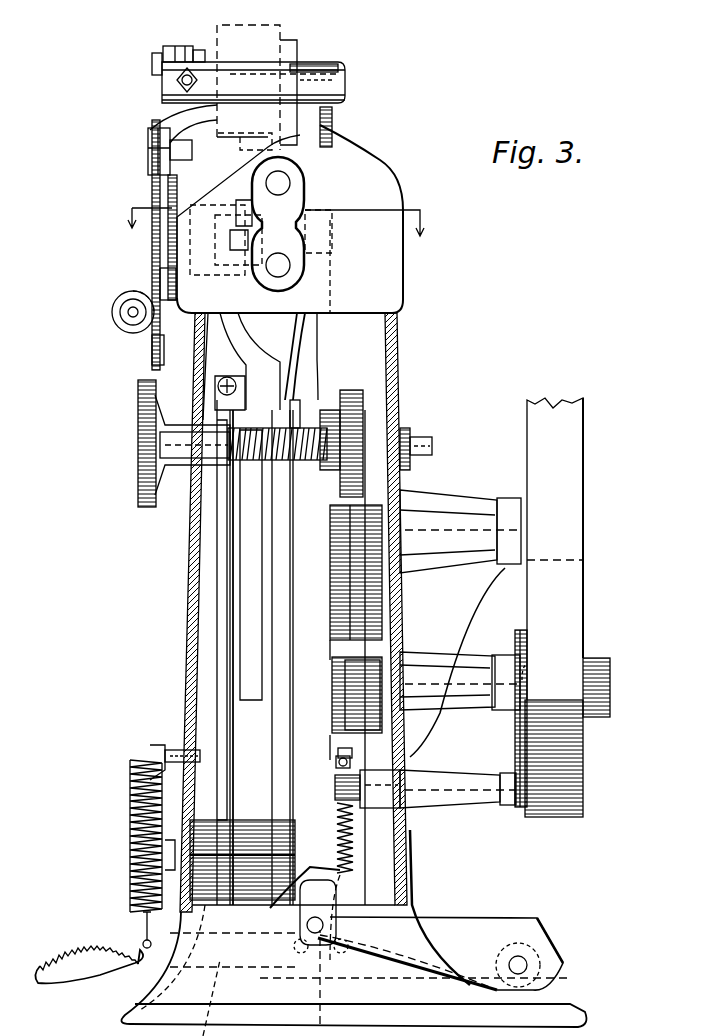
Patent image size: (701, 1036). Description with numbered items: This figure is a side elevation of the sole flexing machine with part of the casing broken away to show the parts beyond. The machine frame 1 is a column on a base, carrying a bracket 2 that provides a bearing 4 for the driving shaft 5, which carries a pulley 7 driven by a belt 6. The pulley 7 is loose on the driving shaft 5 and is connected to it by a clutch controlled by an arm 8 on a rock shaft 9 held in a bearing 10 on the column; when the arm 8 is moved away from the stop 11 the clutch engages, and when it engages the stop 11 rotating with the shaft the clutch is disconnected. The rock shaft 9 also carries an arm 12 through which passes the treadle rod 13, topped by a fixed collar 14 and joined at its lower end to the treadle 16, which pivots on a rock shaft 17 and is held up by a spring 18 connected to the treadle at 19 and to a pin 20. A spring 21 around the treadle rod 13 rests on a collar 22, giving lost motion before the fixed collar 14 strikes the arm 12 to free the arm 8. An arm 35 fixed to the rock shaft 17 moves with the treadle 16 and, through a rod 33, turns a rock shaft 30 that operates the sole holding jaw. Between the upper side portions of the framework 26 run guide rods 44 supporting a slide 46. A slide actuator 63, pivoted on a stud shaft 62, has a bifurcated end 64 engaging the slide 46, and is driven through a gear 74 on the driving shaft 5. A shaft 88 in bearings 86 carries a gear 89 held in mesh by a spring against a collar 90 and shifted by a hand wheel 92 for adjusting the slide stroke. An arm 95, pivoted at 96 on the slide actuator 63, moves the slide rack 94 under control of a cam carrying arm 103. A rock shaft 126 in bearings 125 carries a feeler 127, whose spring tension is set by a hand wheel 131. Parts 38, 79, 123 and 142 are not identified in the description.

The machine frame 1 is at (187, 681).
The bracket 2 is at (500, 590).
The bearing 4 is at (440, 713).
The driving shaft 5 is at (452, 680).
The belt 6 is at (580, 490).
The pulley 7 is at (578, 592).
The arm 8 is at (490, 746).
The rock shaft 9 is at (458, 803).
The bearing 10 is at (480, 805).
The stop 11 is at (522, 680).
The arm 12 is at (372, 785).
The treadle rod 13 is at (335, 785).
The fixed collar 14 is at (336, 762).
The treadle 16 is at (353, 970).
The rock shaft 17 is at (528, 967).
The spring 18 is at (130, 798).
The connection point 19 is at (140, 940).
The pin 20 is at (150, 745).
The spring 21 is at (337, 808).
The collar 22 is at (405, 900).
The upper portion of the framework 26 is at (355, 198).
The rock shaft 30 is at (258, 80).
The rod 33 is at (334, 126).
The arm 35 is at (462, 928).
The bar 38 is at (175, 52).
The guide rods 44 is at (290, 185).
The slide 46 is at (160, 284).
The stud shaft 62 is at (130, 878).
The slide actuator 63 is at (313, 334).
The bifurcated end 64 is at (332, 236).
The gear 74 is at (355, 685).
The gear 79 is at (335, 525).
The bearings 86 is at (178, 470).
The shaft 88 is at (432, 444).
The gear 89 is at (360, 392).
The collar 90 is at (210, 422).
The hand wheel 92 is at (160, 442).
The slide rack 94 is at (236, 212).
The arm 95 is at (247, 328).
The pivot 96 is at (298, 402).
The cam carrying arm 103 is at (227, 703).
The cam 123 is at (272, 915).
The bearings 125 is at (148, 164).
The rock shaft 126 is at (162, 246).
The feeler 127 is at (172, 110).
The hand wheel 131 is at (112, 314).
The pinion 142 is at (340, 430).